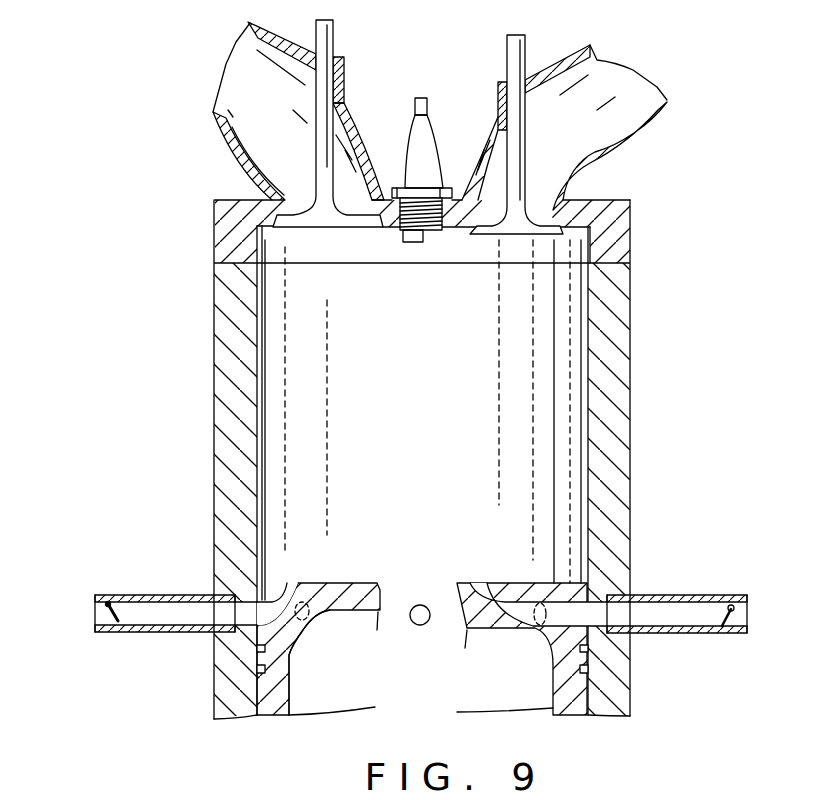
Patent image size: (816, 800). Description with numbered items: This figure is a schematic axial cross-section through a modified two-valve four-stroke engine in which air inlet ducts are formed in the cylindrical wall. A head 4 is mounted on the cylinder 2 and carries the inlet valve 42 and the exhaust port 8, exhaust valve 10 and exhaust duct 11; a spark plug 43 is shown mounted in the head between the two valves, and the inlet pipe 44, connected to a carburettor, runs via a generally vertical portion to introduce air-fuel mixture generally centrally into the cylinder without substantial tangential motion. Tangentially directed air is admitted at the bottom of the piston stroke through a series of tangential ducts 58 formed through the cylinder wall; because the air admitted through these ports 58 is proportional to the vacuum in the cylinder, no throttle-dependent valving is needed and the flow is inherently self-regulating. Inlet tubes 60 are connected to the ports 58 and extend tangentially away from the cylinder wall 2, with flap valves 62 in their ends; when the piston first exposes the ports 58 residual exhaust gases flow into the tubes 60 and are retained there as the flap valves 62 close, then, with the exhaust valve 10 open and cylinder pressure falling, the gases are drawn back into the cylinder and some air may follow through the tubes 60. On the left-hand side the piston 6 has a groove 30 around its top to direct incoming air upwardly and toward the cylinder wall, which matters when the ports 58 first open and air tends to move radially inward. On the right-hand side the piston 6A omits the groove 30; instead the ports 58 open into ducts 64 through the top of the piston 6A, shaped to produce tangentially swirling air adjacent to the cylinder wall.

The cylinder 2 is at (608, 360).
The head 4 is at (622, 245).
The piston 6 is at (357, 586).
The piston 6A is at (518, 588).
The exhaust port 8 is at (547, 211).
The exhaust valve 10 is at (518, 173).
The exhaust duct 11 is at (633, 108).
The groove 30 is at (282, 615).
The inlet valve 42 is at (349, 222).
The spark plug 43 is at (425, 130).
The inlet pipe 44 is at (233, 140).
The tangential ducts 58 is at (288, 602).
The inlet tubes 60 is at (190, 630).
The flap valves 62 is at (112, 604).
The ducts 64 is at (488, 595).